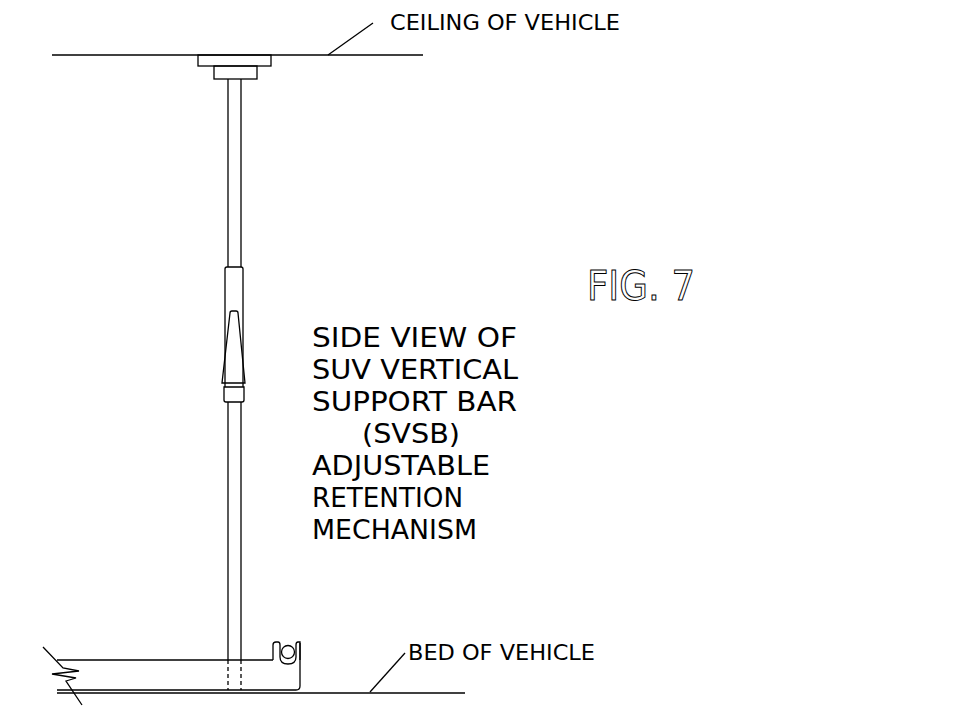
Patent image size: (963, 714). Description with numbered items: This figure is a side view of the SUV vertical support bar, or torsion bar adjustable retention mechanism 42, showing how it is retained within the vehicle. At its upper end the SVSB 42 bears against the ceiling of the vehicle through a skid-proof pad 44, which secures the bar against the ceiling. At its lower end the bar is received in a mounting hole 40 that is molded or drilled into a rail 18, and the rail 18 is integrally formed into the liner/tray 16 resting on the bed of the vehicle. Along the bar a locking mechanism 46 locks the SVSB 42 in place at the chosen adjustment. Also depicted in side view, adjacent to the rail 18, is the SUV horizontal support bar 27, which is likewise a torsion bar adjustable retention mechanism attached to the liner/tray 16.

The liner/tray 16 is at (120, 692).
The rail 18 is at (168, 668).
The SUV horizontal support bar (SHSB) 27 is at (300, 652).
The mounting hole 40 is at (235, 675).
The SUV vertical support bar (SVSB) 42 is at (233, 174).
The skid-proof pad 44 is at (235, 61).
The locking mechanism 46 is at (233, 285).